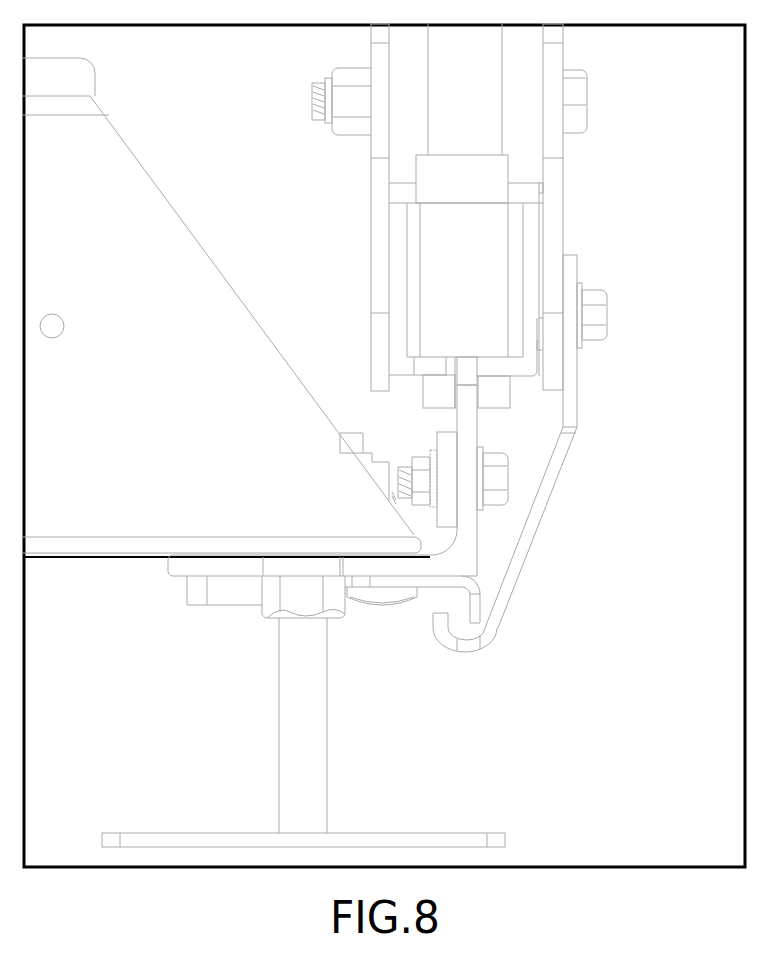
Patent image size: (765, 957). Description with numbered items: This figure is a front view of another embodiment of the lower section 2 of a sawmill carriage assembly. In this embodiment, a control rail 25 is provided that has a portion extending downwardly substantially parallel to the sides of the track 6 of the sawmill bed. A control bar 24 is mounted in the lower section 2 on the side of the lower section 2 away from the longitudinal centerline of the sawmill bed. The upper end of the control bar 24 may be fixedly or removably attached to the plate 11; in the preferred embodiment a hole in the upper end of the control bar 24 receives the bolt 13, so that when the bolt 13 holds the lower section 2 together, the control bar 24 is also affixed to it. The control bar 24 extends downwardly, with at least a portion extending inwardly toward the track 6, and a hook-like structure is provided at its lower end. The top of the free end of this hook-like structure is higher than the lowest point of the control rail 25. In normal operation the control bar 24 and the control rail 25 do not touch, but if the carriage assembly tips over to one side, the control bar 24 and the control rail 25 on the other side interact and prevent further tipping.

The lower section 2 is at (309, 246).
The plate 11 is at (554, 220).
The bolt 13 is at (595, 307).
The track 6 is at (470, 428).
The control bar 24 is at (553, 463).
The control rail 25 is at (477, 613).